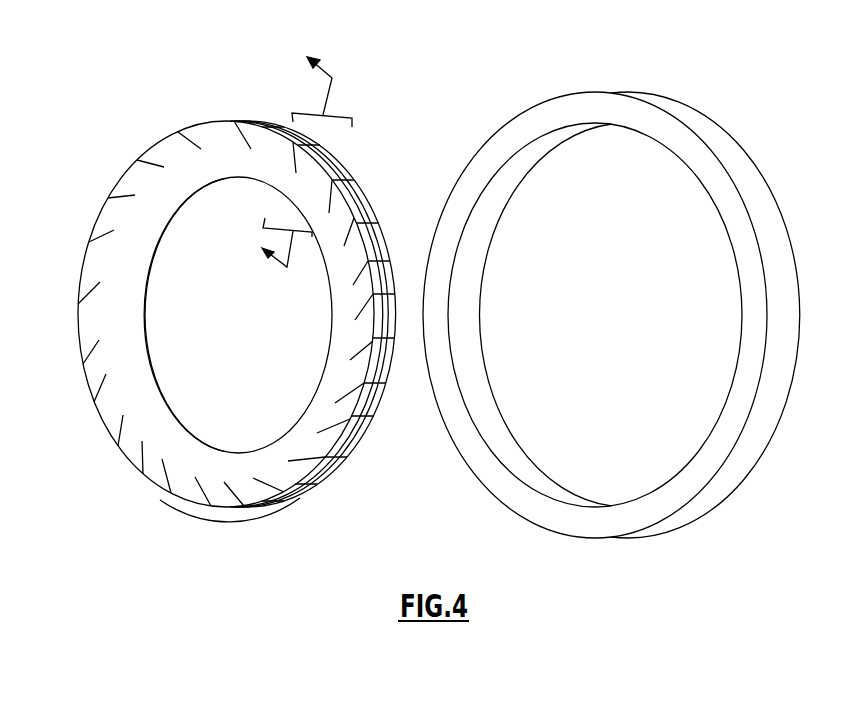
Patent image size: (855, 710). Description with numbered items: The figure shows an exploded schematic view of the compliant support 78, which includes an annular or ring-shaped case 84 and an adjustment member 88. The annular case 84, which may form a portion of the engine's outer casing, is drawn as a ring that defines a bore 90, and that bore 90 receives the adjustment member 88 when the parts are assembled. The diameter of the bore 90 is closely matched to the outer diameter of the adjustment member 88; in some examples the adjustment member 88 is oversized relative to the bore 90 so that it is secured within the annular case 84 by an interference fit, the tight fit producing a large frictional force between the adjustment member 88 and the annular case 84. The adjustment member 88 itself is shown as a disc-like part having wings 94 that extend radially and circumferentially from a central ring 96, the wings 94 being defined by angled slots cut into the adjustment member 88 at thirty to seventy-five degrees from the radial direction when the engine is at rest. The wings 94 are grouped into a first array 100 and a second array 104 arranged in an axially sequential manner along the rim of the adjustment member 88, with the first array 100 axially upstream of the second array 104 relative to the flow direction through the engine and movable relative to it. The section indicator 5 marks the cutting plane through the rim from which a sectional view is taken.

The support 78 is at (692, 54).
The annular case 84 is at (611, 336).
The adjustment member 88 is at (220, 337).
The bore 90 is at (502, 451).
The wings 94 is at (195, 495).
The ring 96 is at (217, 470).
The first array 100 is at (246, 506).
The second array 104 is at (298, 493).
The section line 5- 5 is at (307, 171).